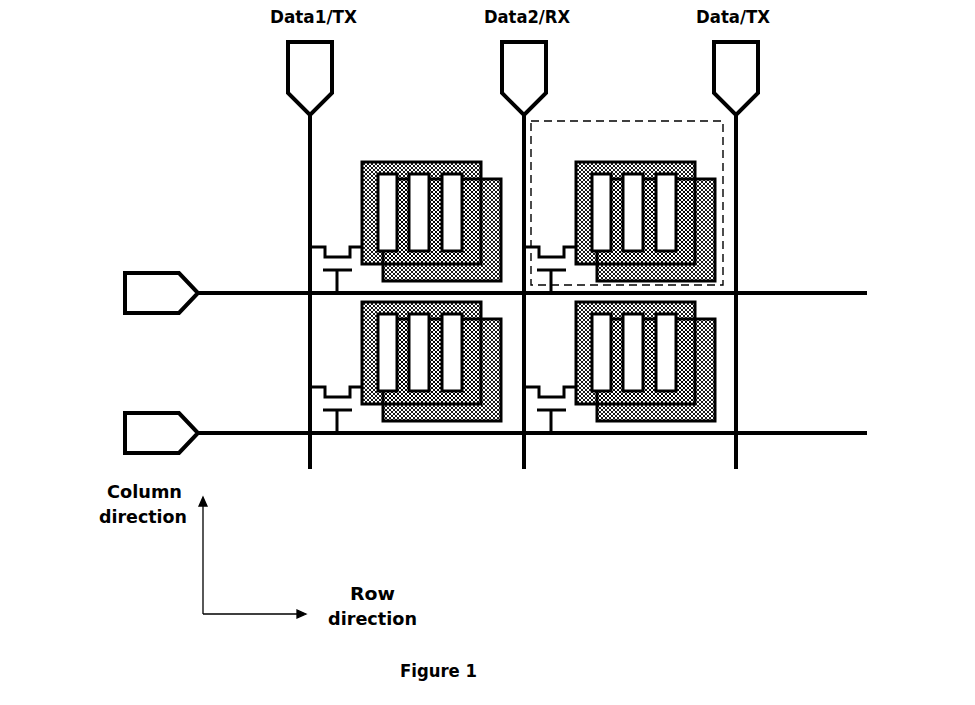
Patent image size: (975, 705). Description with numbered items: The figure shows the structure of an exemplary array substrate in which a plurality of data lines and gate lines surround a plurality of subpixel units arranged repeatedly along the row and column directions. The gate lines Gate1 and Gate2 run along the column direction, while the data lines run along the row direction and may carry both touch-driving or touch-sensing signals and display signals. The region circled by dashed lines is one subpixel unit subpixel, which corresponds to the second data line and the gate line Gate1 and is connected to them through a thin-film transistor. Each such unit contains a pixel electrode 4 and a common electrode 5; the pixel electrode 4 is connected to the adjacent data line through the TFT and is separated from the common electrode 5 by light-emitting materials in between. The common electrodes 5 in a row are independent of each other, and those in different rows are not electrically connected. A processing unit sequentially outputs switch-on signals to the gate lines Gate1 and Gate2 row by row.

The pixel electrode 4 is at (698, 166).
The common electrode 5 is at (708, 200).
The subpixel unit subpixel is at (684, 168).
The first gate line Gate1 is at (451, 293).
The second gate line Gate2 is at (451, 433).